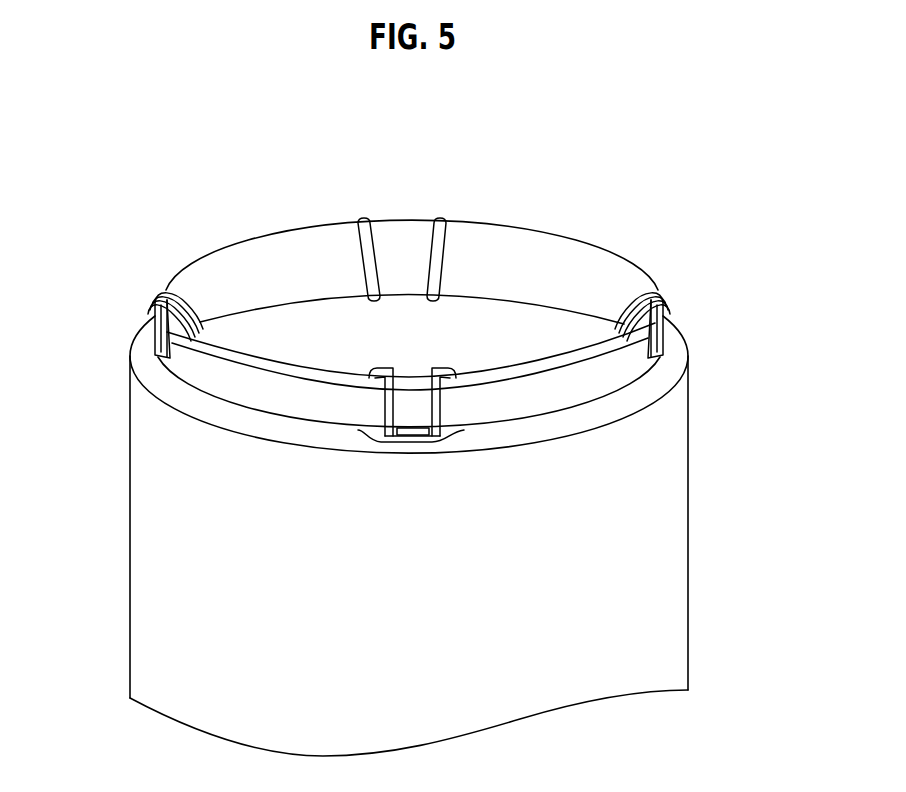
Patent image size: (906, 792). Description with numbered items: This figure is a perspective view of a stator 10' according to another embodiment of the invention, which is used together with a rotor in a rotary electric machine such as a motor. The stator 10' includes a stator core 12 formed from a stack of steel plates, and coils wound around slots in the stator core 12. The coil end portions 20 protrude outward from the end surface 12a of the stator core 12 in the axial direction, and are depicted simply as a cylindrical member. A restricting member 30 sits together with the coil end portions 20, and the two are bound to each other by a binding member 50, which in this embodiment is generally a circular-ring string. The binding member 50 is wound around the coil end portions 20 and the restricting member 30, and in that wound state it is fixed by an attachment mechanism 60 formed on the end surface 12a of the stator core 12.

The stator 10' is at (265, 157).
The stator core 12 is at (670, 551).
The end surface 12a is at (675, 355).
The coil end portions 20 is at (202, 377).
The restricting member 30 is at (566, 239).
The binding member 50 is at (441, 219).
The attachment mechanism 60 is at (415, 442).